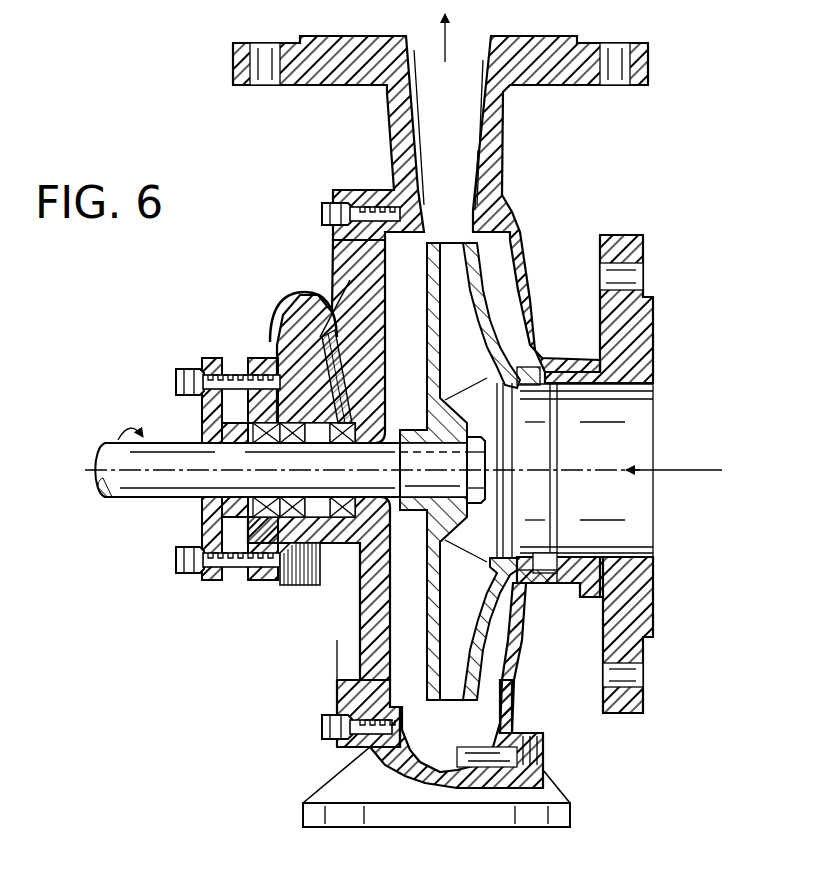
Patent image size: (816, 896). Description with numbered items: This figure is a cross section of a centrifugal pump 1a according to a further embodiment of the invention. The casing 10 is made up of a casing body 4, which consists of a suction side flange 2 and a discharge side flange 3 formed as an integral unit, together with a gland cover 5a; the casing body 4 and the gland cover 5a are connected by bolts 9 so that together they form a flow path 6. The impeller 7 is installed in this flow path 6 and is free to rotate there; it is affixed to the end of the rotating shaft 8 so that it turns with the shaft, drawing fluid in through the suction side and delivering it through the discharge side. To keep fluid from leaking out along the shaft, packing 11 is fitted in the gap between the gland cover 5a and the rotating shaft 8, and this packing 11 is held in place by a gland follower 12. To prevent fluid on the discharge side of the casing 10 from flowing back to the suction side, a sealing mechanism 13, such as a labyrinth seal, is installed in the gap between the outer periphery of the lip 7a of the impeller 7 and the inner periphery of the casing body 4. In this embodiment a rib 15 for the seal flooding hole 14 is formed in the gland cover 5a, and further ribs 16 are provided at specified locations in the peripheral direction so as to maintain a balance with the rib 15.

The centrifugal pump 1a is at (667, 166).
The suction side flange 2 is at (640, 368).
The discharge side flange 3 is at (632, 62).
The casing body 4 is at (518, 265).
The gland cover 5a is at (378, 630).
The flow path 6 is at (447, 753).
The impeller 7 is at (499, 322).
The lip 7a is at (540, 560).
The rotating shaft 8 is at (118, 492).
The bolts 9 is at (325, 213).
The casing 10 is at (388, 138).
The packing 11 is at (343, 655).
The gland follower 12 is at (207, 517).
The sealing mechanism 13 is at (480, 540).
The seal flooding hole 14 is at (300, 347).
The rib 15 is at (333, 323).
The ribs 16 is at (317, 607).